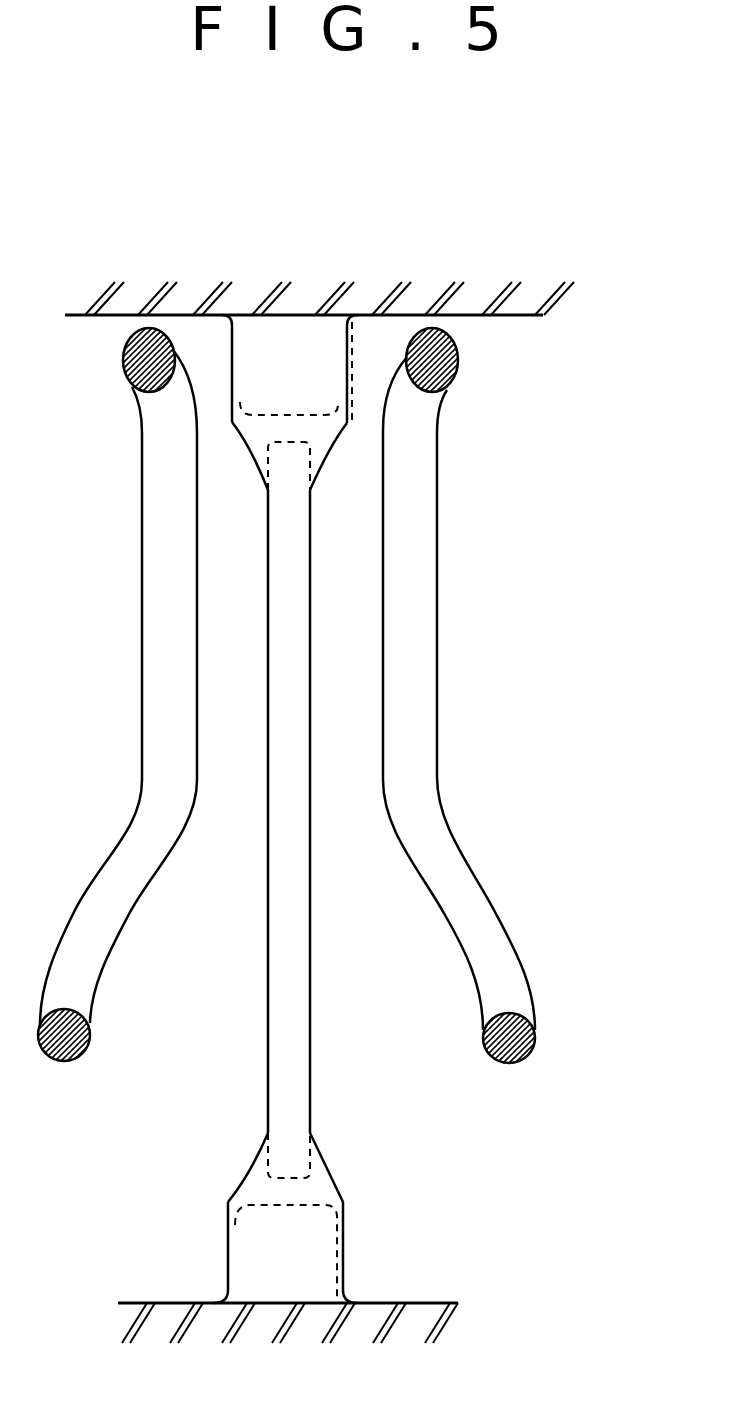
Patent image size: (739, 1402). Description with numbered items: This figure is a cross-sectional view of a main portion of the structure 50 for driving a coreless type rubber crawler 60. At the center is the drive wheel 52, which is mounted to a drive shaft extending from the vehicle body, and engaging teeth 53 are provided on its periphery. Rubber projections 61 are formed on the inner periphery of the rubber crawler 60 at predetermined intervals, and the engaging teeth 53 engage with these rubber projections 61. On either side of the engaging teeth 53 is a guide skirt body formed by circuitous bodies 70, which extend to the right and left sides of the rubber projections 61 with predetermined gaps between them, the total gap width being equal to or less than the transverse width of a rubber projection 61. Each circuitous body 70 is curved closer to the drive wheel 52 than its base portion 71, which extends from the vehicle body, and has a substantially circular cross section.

The structure for driving the rubber crawler 50 is at (465, 818).
The drive wheel 52 is at (290, 918).
The engaging teeth 53 is at (233, 422).
The rubber crawler 60 is at (298, 285).
The rubber projections 61 is at (313, 338).
The circuitous body 70 is at (123, 366).
The base portion 71 is at (533, 1057).